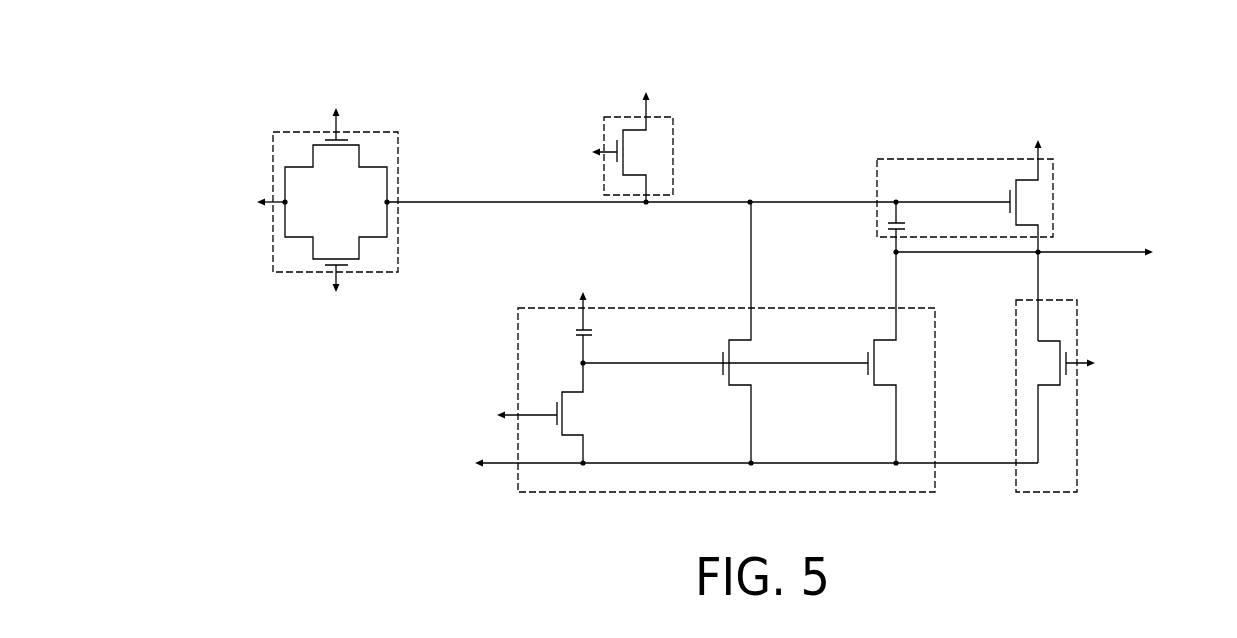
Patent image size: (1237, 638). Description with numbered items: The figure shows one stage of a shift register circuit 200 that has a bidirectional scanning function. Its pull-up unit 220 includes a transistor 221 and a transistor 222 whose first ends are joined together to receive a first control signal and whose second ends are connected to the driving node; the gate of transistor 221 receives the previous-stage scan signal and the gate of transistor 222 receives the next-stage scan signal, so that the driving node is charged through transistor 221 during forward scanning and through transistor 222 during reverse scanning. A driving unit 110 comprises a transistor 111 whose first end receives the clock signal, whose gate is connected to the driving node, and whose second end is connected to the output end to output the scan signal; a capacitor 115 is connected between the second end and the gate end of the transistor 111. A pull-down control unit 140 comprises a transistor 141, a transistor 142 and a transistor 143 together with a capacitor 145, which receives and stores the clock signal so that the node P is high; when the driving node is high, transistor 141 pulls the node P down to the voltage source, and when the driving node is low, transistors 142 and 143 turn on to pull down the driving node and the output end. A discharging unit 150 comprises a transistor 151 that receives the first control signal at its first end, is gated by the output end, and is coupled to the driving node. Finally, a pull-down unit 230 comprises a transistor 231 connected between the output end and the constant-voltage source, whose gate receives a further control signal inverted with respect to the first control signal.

The shift register circuit 200 is at (203, 47).
The pull-up unit 220 is at (273, 153).
The transistor 221 is at (359, 155).
The transistor 222 is at (359, 247).
The discharging unit 150 is at (673, 137).
The transistor 151 is at (623, 173).
The driving unit 110 is at (1053, 178).
The transistor 111 is at (1027, 178).
The capacitor 115 is at (888, 228).
The pull-down control unit 140 is at (556, 492).
The transistor 141 is at (562, 391).
The transistor 142 is at (735, 388).
The transistor 143 is at (880, 388).
The capacitor 145 is at (592, 333).
The pull-down unit 230 is at (1055, 492).
The transistor 231 is at (1045, 388).